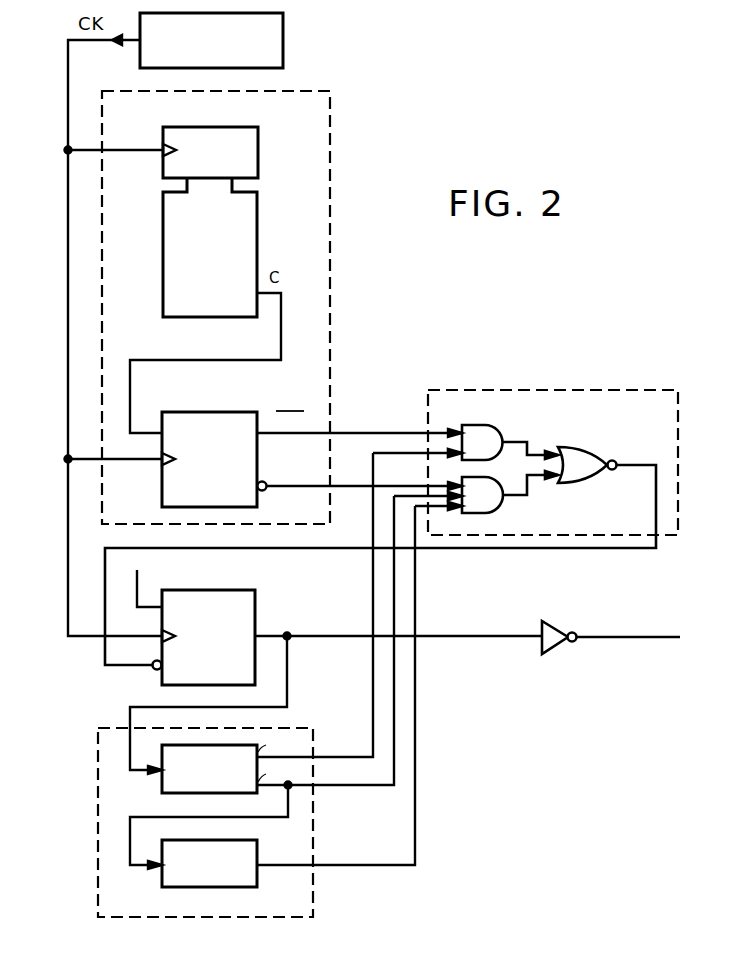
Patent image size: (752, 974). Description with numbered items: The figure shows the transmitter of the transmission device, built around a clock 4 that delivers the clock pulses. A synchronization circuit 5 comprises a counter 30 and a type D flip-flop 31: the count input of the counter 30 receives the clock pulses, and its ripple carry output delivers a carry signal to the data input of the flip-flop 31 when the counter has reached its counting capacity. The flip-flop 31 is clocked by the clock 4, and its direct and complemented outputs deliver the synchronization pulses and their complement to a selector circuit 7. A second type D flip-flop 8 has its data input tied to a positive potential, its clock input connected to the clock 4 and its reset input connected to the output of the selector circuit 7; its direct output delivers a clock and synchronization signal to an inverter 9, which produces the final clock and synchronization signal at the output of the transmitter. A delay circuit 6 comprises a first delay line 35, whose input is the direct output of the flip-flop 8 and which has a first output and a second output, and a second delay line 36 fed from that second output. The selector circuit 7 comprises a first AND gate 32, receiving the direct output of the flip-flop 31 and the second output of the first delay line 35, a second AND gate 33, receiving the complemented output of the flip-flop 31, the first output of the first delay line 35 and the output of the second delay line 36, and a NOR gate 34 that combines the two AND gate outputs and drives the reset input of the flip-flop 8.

The clock 4 is at (273, 37).
The synchronization circuit 5 is at (331, 134).
The counter 30 is at (248, 229).
The type D flip-flop 31 is at (198, 420).
The first AND gate 32 is at (494, 430).
The second AND gate 33 is at (494, 508).
The NOR gate 34 is at (570, 442).
The selector circuit 7 is at (566, 390).
The type D flip-flop 8 is at (222, 598).
The inverter 9 is at (546, 620).
The delay circuit 6 is at (313, 841).
The first delay line 35 is at (166, 787).
The second delay line 36 is at (250, 849).